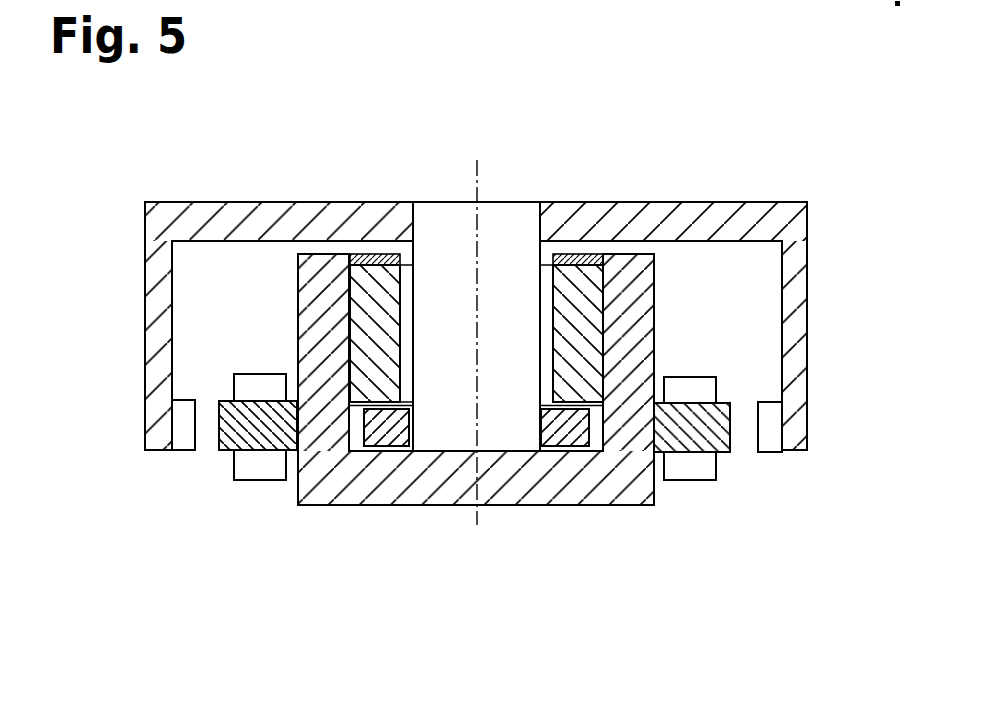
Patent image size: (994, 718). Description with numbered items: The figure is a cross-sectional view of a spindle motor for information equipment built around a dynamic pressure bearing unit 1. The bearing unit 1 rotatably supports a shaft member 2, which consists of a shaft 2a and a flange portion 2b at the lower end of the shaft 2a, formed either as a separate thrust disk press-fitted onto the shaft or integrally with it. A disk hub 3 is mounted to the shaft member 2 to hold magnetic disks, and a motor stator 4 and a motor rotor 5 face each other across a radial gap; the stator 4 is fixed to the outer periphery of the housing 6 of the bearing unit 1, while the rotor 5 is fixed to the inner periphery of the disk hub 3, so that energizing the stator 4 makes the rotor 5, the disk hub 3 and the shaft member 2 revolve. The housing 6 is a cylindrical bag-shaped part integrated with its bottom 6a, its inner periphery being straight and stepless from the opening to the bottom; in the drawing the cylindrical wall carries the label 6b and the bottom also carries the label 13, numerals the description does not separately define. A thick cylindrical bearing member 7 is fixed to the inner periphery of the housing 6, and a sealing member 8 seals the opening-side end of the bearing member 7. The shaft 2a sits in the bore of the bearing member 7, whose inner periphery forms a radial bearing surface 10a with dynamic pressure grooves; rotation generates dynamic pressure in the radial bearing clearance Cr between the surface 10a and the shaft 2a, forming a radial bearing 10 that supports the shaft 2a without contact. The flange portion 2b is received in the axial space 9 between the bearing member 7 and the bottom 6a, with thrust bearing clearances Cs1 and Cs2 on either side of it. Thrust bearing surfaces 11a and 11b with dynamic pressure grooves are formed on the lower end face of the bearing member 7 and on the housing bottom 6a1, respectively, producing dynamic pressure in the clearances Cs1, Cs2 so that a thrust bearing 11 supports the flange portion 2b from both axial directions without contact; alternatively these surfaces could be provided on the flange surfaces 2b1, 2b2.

The dynamic pressure bearing unit 1 is at (348, 516).
The shaft member 2 is at (436, 420).
The shaft 2a is at (447, 213).
The flange portion 2b is at (297, 500).
The flange portion surface 2b1 is at (642, 340).
The flange portion surface 2b2 is at (570, 458).
The disk hub 3 is at (180, 212).
The motor stator 4 is at (243, 462).
The motor rotor 5 is at (180, 438).
The housing 6 is at (660, 303).
The housing bottom 6a is at (385, 500).
The base 13 is at (476, 543).
The housing bottom 6a1 is at (489, 451).
The side wall of housing 6b is at (320, 263).
The bearing member 7 is at (593, 317).
The sealing member 8 is at (370, 262).
The axial space 9 is at (453, 454).
The radial bearing 10 is at (396, 332).
The radial bearing surface 10a is at (566, 300).
The thrust bearing 11 is at (345, 425).
The thrust bearing surface 11a is at (400, 412).
The thrust bearing surface 11b is at (548, 451).
The radial bearing clearance Cr is at (548, 312).
The thrust bearing clearance Cs1 is at (603, 408).
The thrust bearing clearance Cs2 is at (590, 452).